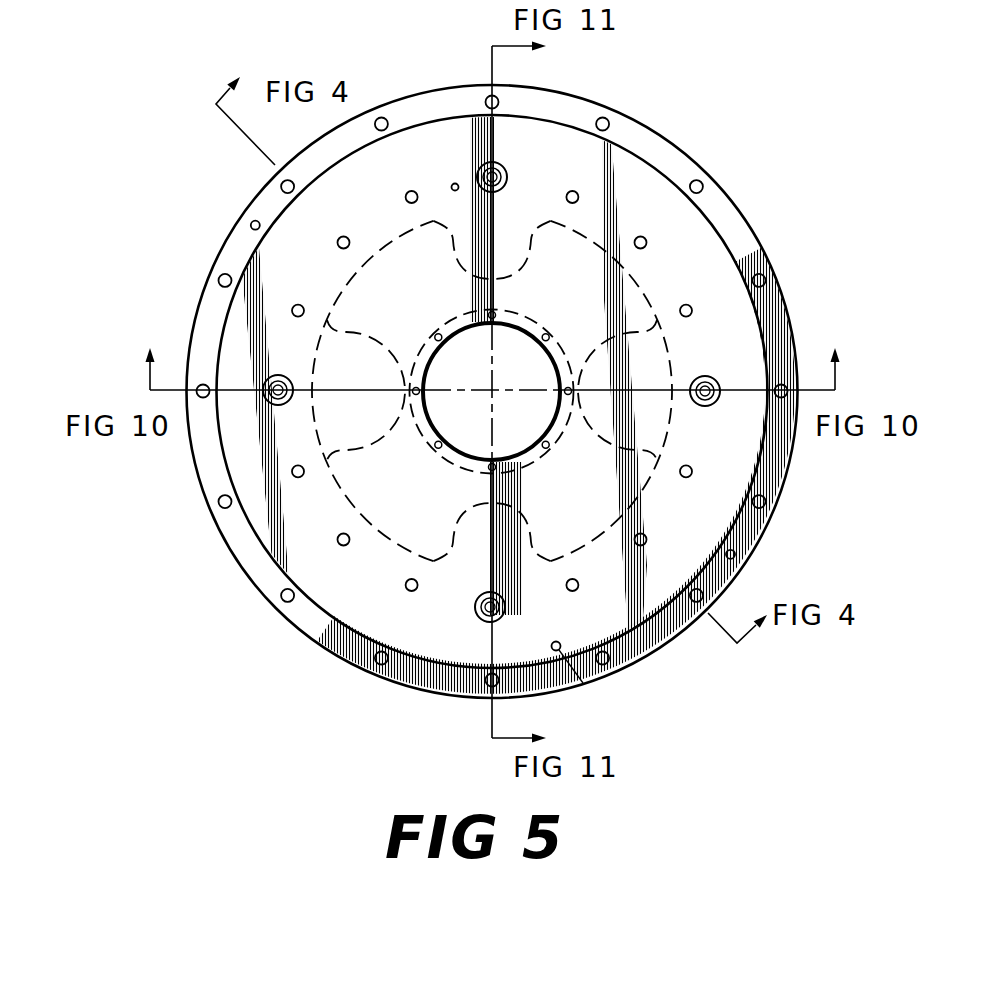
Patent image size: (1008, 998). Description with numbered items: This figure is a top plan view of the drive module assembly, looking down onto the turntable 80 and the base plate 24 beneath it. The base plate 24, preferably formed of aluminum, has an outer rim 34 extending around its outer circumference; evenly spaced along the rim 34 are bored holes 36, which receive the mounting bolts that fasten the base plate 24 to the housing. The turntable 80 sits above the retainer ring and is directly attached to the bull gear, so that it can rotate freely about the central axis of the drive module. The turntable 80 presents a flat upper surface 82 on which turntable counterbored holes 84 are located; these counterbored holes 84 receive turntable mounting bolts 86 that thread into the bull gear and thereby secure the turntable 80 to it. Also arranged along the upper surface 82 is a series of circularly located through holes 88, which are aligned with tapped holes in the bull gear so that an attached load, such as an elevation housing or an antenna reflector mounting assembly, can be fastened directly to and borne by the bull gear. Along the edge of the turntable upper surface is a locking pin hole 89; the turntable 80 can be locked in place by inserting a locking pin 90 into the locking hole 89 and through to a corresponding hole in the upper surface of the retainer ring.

The base plate 24 is at (250, 557).
The outer rim 34 is at (350, 668).
The bored holes 36 is at (282, 609).
The turntable 80 is at (697, 246).
The flat upper surface 82 is at (322, 267).
The turntable counterbored holes 84 is at (705, 376).
The turntable mounting bolts 86 is at (706, 407).
The through holes 88 is at (431, 166).
The locking pin hole 89 is at (583, 683).
The locking pin 90 is at (557, 642).